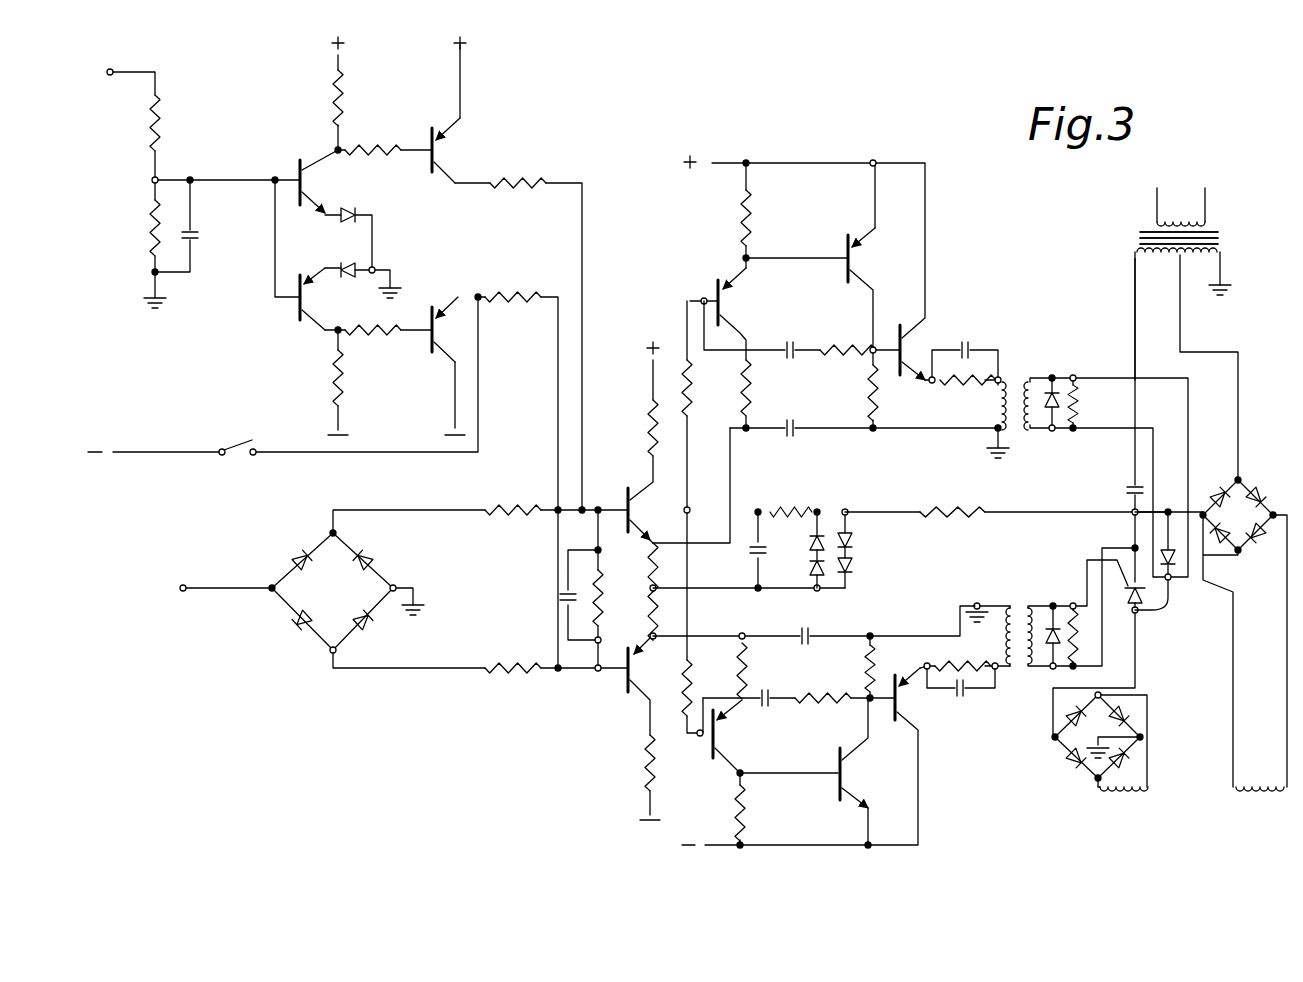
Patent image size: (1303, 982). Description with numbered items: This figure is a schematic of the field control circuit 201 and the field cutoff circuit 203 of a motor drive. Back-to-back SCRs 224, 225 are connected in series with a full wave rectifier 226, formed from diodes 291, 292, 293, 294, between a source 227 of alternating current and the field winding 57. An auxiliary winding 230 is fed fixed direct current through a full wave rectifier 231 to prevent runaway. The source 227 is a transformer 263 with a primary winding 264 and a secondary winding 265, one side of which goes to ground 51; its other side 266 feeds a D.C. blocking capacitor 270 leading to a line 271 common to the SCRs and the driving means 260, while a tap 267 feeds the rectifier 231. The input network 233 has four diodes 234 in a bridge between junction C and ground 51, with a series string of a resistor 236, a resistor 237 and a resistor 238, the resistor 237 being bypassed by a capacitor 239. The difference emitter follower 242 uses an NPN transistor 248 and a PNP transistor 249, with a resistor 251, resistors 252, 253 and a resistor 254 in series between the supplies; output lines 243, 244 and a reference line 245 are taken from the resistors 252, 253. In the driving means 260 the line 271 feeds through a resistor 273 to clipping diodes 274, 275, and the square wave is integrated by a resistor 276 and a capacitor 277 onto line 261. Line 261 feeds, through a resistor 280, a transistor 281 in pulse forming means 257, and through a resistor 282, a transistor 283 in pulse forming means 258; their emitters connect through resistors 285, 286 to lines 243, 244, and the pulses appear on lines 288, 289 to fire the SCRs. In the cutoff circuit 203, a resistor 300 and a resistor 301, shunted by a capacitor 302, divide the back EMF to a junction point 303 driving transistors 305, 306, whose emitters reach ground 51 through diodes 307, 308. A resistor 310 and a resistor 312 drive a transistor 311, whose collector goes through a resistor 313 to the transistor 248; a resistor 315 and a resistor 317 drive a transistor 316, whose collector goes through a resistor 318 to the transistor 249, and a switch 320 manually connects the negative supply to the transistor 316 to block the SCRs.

The ground 51 is at (165, 300).
The field winding 57 is at (1116, 795).
The field control circuit 201 is at (1050, 289).
The field cutoff circuit 203 is at (480, 252).
The SCR 224 is at (1240, 553).
The SCR 225 is at (1158, 600).
The full wave rectifier 226 is at (1062, 750).
The source of alternating current 227 is at (1138, 216).
The auxiliary winding 230 is at (1284, 792).
The full wave rectifier 231 is at (1255, 524).
The input network 233 is at (503, 576).
The diode 234 is at (300, 552).
The resistor 236 is at (495, 505).
The resistor 237 is at (566, 562).
The resistor 238 is at (510, 648).
The capacitor 239 is at (565, 600).
The difference emitter follower 242 is at (648, 596).
The output line 243 is at (728, 545).
The output line 244 is at (708, 634).
The reference line 245 is at (792, 592).
The NPN transistor 248 is at (624, 502).
The PNP transistor 249 is at (626, 684).
The resistor 251 is at (648, 422).
The resistor 252 is at (648, 562).
The resistor 253 is at (645, 612).
The resistor 254 is at (645, 776).
The pulse forming means 257 is at (843, 219).
The pulse forming means 258 is at (820, 826).
The driving means 260 is at (927, 564).
The line 261 is at (758, 508).
The transformer 263 is at (1220, 241).
The primary winding 264 is at (1210, 220).
The secondary winding 265 is at (1150, 262).
The other side of the secondary winding 266 is at (1133, 313).
The tap 267 is at (1182, 260).
The D.C. blocking capacitor 270 is at (1126, 490).
The line 271 is at (1100, 516).
The resistor 273 is at (966, 508).
The clipping diode 274 is at (852, 540).
The clipping diode 275 is at (810, 543).
The resistor 276 is at (790, 509).
The capacitor 277 is at (810, 568).
The resistor 280 is at (690, 378).
The NPN transistor 281 is at (714, 288).
The resistor 282 is at (683, 668).
The PNP transistor 283 is at (708, 754).
The resistor 285 is at (752, 380).
The resistor 286 is at (750, 655).
The lines 288 is at (1100, 380).
The lines 289 is at (1088, 585).
The diode 291 is at (1130, 727).
The diode 292 is at (1132, 752).
The diode 293 is at (1068, 720).
The diode 294 is at (1076, 766).
The resistor 300 is at (150, 120).
The resistor 301 is at (150, 238).
The bypass capacitor 302 is at (194, 240).
The junction point 303 is at (150, 182).
The NPN transistor 305 is at (298, 167).
The PNP transistor 306 is at (298, 313).
The diode 307 is at (360, 213).
The diode 308 is at (348, 278).
The resistor 310 is at (333, 100).
The PNP transistor 311 is at (430, 132).
The resistor 312 is at (396, 146).
The resistor 313 is at (528, 180).
The resistor 315 is at (333, 378).
The NPN transistor 316 is at (440, 356).
The resistor 317 is at (398, 336).
The resistor 318 is at (508, 294).
The switch 320 is at (236, 444).